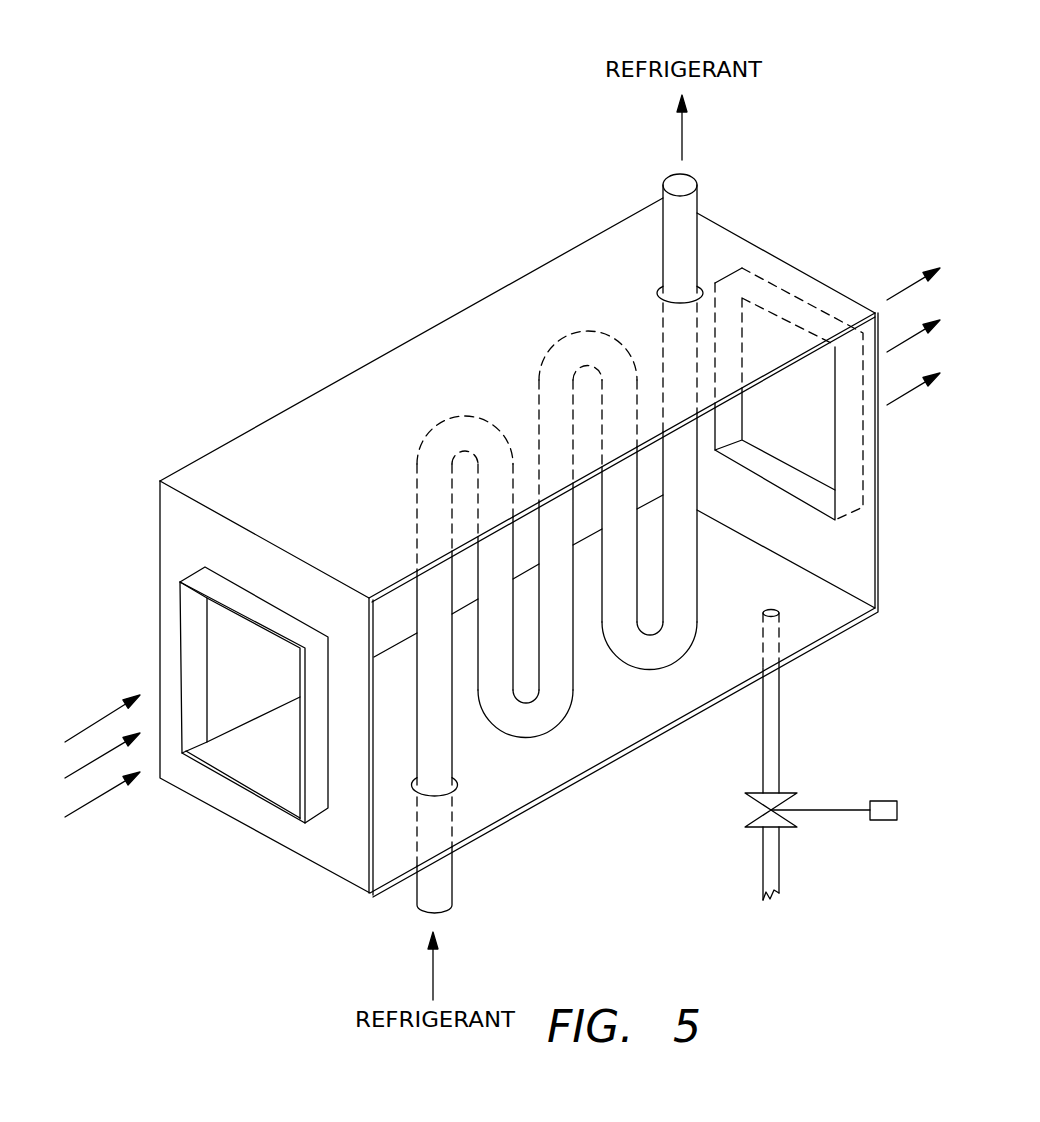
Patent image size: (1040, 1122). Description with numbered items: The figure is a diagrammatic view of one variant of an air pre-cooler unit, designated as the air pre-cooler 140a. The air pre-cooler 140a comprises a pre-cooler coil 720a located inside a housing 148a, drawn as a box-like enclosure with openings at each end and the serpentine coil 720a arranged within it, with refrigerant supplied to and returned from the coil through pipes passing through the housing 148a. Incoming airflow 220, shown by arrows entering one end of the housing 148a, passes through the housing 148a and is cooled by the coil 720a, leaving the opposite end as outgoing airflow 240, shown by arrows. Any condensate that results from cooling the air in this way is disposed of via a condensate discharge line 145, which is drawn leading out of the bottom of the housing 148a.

The air pre-cooler 140a is at (382, 102).
The housing 148a is at (423, 333).
The pre-cooler coil 720a is at (417, 492).
The condensate discharge line 145 is at (779, 757).
The incoming airflow 220 is at (145, 877).
The outgoing airflow 240 is at (925, 253).